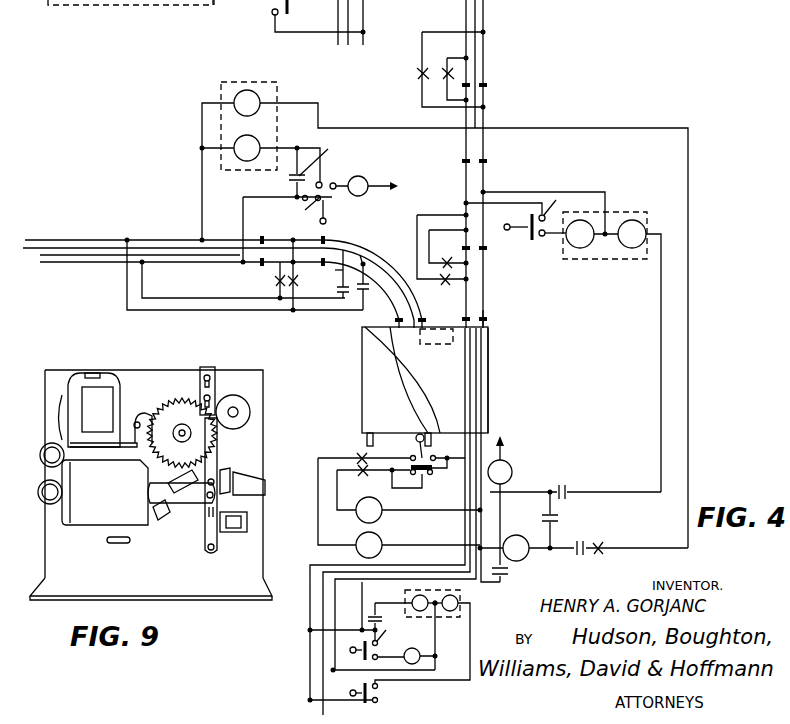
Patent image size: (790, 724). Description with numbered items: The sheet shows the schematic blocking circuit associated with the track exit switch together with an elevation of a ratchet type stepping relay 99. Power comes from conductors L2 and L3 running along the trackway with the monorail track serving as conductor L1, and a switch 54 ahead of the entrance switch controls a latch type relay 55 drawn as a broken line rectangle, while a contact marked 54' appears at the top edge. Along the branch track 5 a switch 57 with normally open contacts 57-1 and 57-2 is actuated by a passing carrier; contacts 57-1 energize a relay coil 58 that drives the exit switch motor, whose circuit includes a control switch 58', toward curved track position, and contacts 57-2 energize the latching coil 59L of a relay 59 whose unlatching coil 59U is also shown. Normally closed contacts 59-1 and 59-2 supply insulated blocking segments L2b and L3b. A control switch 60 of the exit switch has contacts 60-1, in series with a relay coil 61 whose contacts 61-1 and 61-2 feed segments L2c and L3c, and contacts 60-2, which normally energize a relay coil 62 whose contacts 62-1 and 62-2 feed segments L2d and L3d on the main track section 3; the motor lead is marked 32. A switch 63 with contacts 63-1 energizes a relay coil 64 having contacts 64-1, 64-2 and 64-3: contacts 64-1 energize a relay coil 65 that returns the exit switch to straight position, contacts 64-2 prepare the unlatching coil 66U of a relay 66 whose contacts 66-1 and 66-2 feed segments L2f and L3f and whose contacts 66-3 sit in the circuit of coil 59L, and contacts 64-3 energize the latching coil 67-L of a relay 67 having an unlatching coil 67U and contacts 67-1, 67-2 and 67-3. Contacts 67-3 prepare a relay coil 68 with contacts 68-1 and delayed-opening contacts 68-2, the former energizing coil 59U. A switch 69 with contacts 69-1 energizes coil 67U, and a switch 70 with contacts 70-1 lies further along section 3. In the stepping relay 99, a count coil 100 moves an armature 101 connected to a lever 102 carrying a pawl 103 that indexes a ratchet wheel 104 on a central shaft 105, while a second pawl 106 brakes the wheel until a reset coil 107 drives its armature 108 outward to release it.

In FIG. 4, the latch type relay 55 is at (128, 10).
In FIG. 4, the switch contact 54' is at (227, 7).
In FIG. 4, the switch 54 is at (319, 22).
In FIG. 4, the conductor L3 is at (356, 8).
In FIG. 4, the conductor L2 is at (464, 6).
In FIG. 4, the conductor L1 is at (84, 249).
In FIG. 4, the branch track 5 is at (162, 240).
In FIG. 4, the normally closed contacts 66-1 is at (418, 74).
In FIG. 4, the normally closed contacts 66-2 is at (441, 72).
In FIG. 4, the normally open contacts 66-3 is at (320, 156).
In FIG. 4, the insulated segment L2f is at (462, 150).
In FIG. 4, the insulated segment L3f is at (486, 150).
In FIG. 4, the latch type relay 59 is at (270, 82).
In FIG. 4, the unlatching coil 59U is at (240, 88).
In FIG. 4, the latching coil 59L is at (215, 145).
In FIG. 4, the normally open contacts 57-1 is at (326, 181).
In FIG. 4, the relay coil 58 is at (367, 195).
In FIG. 4, the normally open contacts 57-2 is at (289, 186).
In FIG. 4, the switch 57 is at (306, 208).
In FIG. 4, the normally closed contacts 59-1 is at (290, 310).
In FIG. 4, the normally closed contacts 59-2 is at (272, 280).
In FIG. 4, the insulated blocking segment L3b is at (303, 240).
In FIG. 4, the insulated segment L3c is at (368, 258).
In FIG. 4, the normally open contacts 61-1 is at (335, 298).
In FIG. 4, the normally open contacts 61-2 is at (358, 318).
In FIG. 4, the insulated blocking segment L2b is at (322, 268).
In FIG. 4, the insulated segment L2c is at (392, 314).
In FIG. 4, the contacts 62-1 is at (442, 260).
In FIG. 4, the contacts 62-2 is at (470, 266).
In FIG. 4, the insulated segment L2d is at (462, 306).
In FIG. 4, the insulated segment L3d is at (486, 294).
In FIG. 4, the main track section 3 is at (487, 318).
In FIG. 4, the switch contact 70-1 is at (555, 198).
In FIG. 4, the switch 70 is at (520, 230).
In FIG. 4, the relay 66 is at (635, 200).
In FIG. 4, the unlatching coil 66U is at (644, 228).
In FIG. 4, the normally open contacts 64-2 is at (560, 486).
In FIG. 4, the normally open contacts 67-3 is at (558, 518).
In FIG. 4, the relay coil 65 is at (510, 466).
In FIG. 4, the normally open contacts 64-1 is at (508, 572).
In FIG. 4, the relay coil 68 is at (526, 536).
In FIG. 4, the normally open contacts 68-1 is at (572, 546).
In FIG. 4, the normally closed contacts 68-2 is at (598, 554).
In FIG. 4, the control switch 58' is at (425, 380).
In FIG. 4, the motor 32 is at (492, 409).
In FIG. 4, the control switch 60 is at (414, 436).
In FIG. 4, the contacts 60-1 is at (426, 460).
In FIG. 4, the contacts 60-2 is at (420, 474).
In FIG. 4, the normally closed contacts 67-1 is at (357, 452).
In FIG. 4, the normally closed contacts 67-2 is at (362, 474).
In FIG. 4, the relay coil 62 is at (382, 504).
In FIG. 4, the relay coil 61 is at (380, 540).
In FIG. 4, the normally open contacts 64-3 is at (368, 619).
In FIG. 4, the relay 67 is at (462, 614).
In FIG. 4, the latching coil 67-L is at (412, 600).
In FIG. 4, the unlatching coil 67U is at (460, 602).
In FIG. 4, the normally open contacts 63-1 is at (380, 650).
In FIG. 4, the switch 63 is at (350, 650).
In FIG. 4, the relay coil 64 is at (430, 658).
In FIG. 4, the normally open contacts 69-1 is at (378, 699).
In FIG. 4, the switch 69 is at (350, 693).
In FIG. 9, the stepping relay 99 is at (265, 418).
In FIG. 9, the ratchet wheel 104 is at (170, 404).
In FIG. 9, the central shaft 105 is at (178, 443).
In FIG. 9, the reset coil 107 is at (88, 405).
In FIG. 9, the armature 108 is at (85, 436).
In FIG. 9, the second pawl 106 is at (136, 412).
In FIG. 9, the count coil 100 is at (80, 527).
In FIG. 9, the armature 101 is at (190, 498).
In FIG. 9, the pawl 103 is at (212, 474).
In FIG. 9, the lever 102 is at (216, 546).